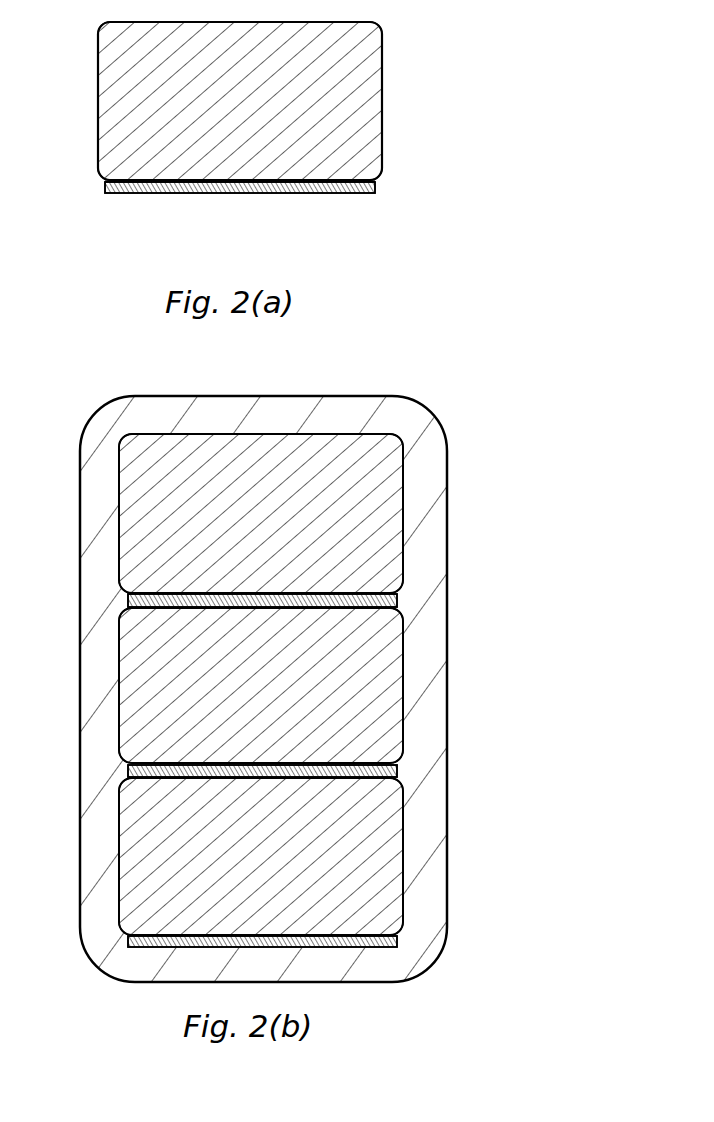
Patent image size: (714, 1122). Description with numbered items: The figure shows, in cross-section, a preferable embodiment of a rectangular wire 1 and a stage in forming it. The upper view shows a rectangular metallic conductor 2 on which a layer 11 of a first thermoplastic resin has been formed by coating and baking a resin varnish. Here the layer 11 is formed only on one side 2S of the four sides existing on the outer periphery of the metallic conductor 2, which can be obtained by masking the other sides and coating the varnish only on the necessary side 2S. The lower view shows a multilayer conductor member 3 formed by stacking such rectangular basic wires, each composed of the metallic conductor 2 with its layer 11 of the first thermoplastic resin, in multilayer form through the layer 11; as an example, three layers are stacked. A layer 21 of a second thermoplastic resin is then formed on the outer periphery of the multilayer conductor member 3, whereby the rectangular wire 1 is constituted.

In FIG. 2B, the rectangular wire 1 is at (330, 658).
In FIG. 2A, the metallic conductor 2 is at (337, 110).
In FIG. 2B, the metallic conductor 2 is at (370, 523).
In FIG. 2A, the one side of the metallic conductor 2S is at (200, 193).
In FIG. 2B, the multilayer conductor member 3 is at (375, 695).
In FIG. 2A, the layer of the first thermoplastic resin 11 is at (303, 193).
In FIG. 2B, the layer of the first thermoplastic resin 11 is at (398, 597).
In FIG. 2B, the layer of the second thermoplastic resin 21 is at (158, 415).